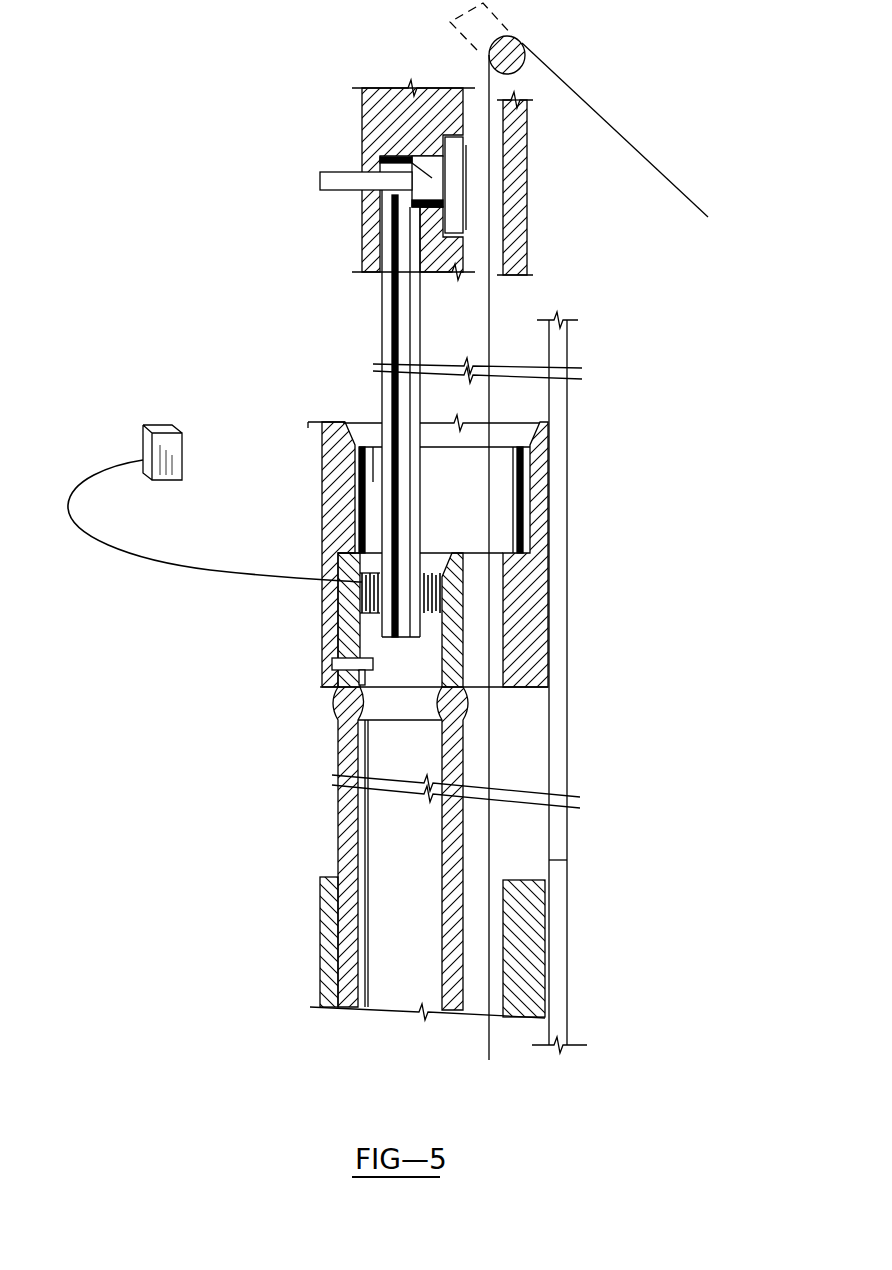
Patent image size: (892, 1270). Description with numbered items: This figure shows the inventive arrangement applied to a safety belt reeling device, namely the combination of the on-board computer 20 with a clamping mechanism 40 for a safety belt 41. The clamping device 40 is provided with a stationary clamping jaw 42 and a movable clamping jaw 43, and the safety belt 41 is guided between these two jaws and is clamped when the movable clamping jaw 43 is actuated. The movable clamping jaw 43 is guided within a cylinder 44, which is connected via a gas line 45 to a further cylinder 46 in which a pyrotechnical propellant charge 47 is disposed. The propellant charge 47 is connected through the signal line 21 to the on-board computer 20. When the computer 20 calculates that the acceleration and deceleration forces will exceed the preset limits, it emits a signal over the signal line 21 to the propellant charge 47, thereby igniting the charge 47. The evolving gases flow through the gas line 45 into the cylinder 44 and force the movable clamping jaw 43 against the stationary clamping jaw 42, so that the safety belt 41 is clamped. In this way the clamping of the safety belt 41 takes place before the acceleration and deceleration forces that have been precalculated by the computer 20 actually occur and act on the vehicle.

The clamping mechanism 40 is at (333, 98).
The safety belt 41 is at (492, 308).
The stationary clamping jaw 42 is at (510, 207).
The movable clamping jaw 43 is at (362, 152).
The cylinder 44 is at (362, 203).
The gas line 45 is at (405, 318).
The further cylinder 46 is at (373, 628).
The pyrotechnical propellant charge 47 is at (340, 602).
The on-board computer 20 is at (173, 445).
The signal line 21 is at (145, 558).